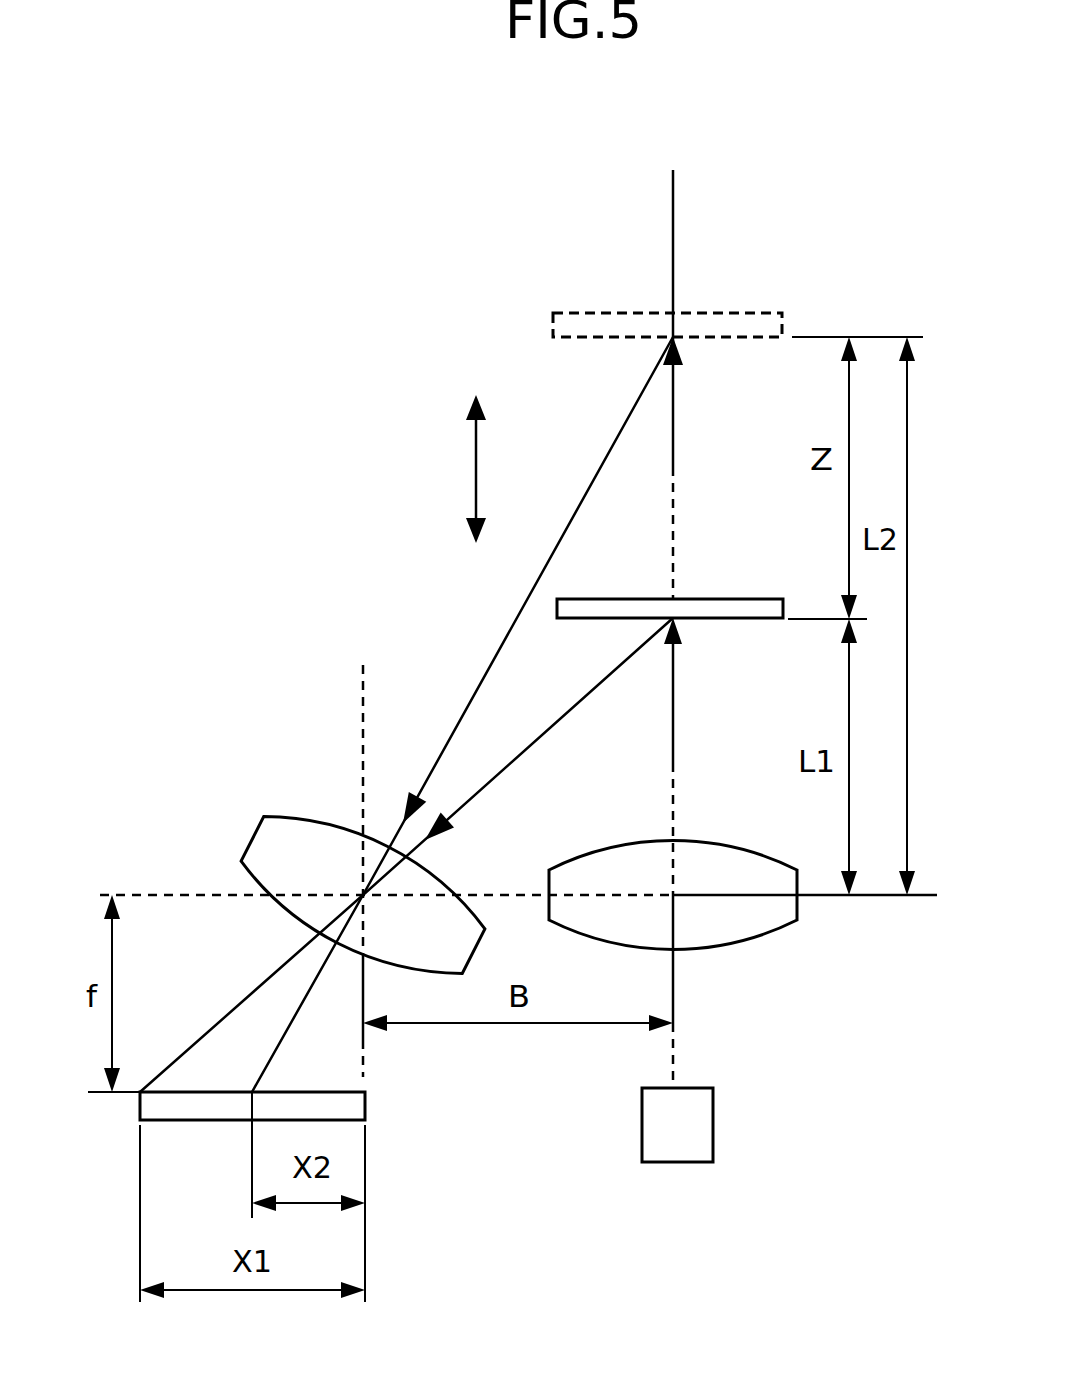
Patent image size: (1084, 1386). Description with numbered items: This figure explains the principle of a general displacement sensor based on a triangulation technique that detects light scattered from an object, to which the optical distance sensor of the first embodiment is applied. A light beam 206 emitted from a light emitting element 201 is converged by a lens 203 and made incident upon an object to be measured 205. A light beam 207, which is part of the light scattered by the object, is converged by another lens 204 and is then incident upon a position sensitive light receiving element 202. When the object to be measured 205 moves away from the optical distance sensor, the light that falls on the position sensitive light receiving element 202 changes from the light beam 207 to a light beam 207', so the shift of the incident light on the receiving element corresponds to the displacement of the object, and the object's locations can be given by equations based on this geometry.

The light emitting element 201 is at (713, 1113).
The position sensitive light receiving element 202 is at (365, 1101).
The lens 203 is at (752, 928).
The lens 204 is at (288, 825).
The object to be measured 205 is at (592, 315).
The light beam 206 is at (673, 692).
The light beam 207 is at (462, 855).
The light beam 207' is at (406, 714).